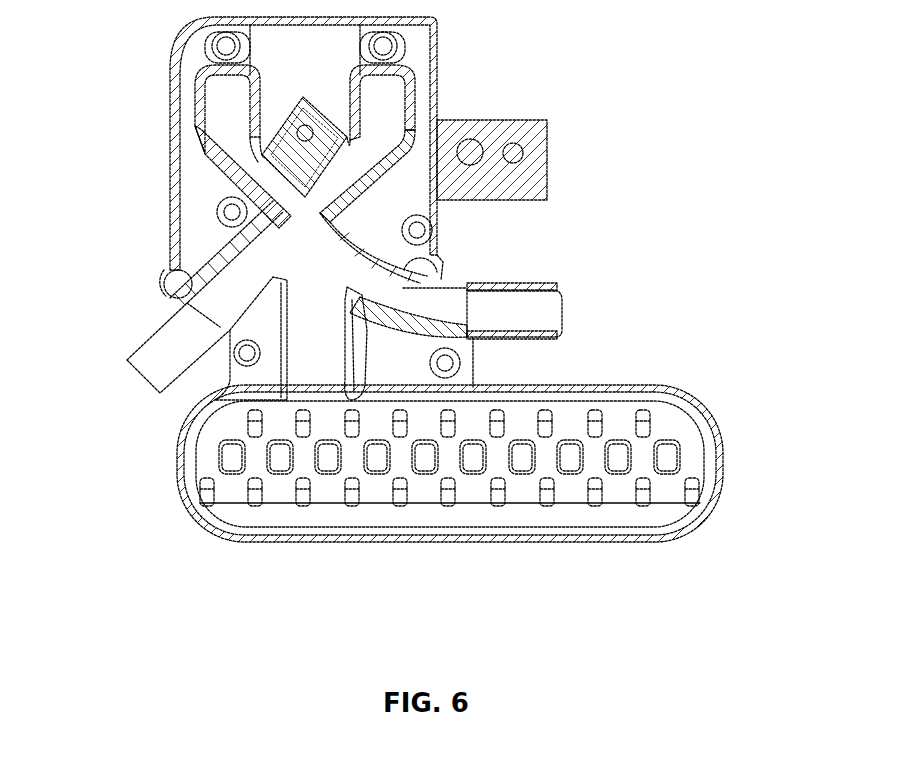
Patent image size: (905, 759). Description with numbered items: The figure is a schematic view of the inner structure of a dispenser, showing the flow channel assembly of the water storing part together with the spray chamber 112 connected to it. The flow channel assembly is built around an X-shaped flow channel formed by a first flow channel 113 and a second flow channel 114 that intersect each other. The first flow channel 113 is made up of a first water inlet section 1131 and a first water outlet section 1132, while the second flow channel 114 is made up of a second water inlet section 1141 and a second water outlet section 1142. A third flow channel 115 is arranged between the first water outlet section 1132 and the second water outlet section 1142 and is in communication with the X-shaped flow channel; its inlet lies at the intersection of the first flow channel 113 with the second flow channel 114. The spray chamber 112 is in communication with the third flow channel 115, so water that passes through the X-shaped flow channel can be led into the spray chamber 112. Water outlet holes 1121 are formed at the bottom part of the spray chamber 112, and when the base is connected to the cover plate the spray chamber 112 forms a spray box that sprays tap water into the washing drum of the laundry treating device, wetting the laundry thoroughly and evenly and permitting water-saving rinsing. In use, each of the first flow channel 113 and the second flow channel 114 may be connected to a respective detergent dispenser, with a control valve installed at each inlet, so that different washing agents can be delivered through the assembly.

The spray chamber 112 is at (663, 422).
The water outlet holes 1121 is at (645, 500).
The first flow channel 113 is at (414, 97).
The first water inlet section 1131 is at (373, 145).
The second flow channel 114 is at (193, 97).
The second water inlet section 1141 is at (222, 128).
The first water outlet section 1132 is at (243, 273).
The second water outlet section 1142 is at (407, 288).
The third flow channel 115 is at (340, 328).